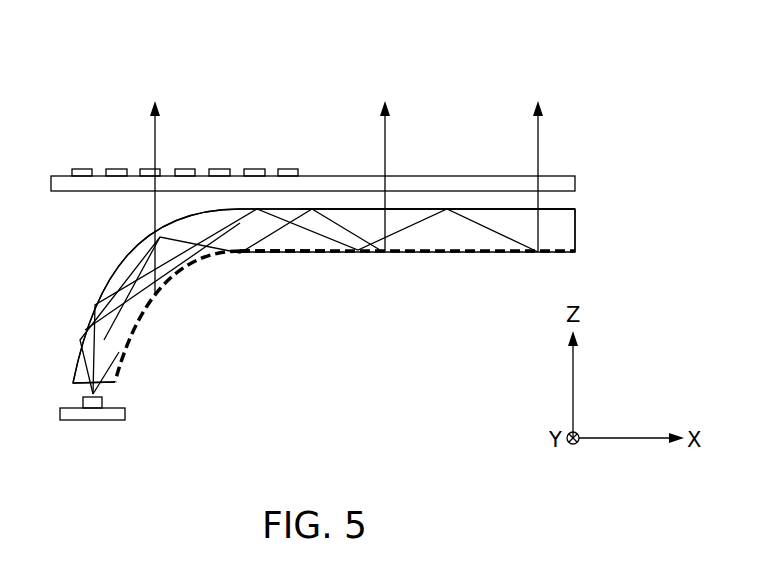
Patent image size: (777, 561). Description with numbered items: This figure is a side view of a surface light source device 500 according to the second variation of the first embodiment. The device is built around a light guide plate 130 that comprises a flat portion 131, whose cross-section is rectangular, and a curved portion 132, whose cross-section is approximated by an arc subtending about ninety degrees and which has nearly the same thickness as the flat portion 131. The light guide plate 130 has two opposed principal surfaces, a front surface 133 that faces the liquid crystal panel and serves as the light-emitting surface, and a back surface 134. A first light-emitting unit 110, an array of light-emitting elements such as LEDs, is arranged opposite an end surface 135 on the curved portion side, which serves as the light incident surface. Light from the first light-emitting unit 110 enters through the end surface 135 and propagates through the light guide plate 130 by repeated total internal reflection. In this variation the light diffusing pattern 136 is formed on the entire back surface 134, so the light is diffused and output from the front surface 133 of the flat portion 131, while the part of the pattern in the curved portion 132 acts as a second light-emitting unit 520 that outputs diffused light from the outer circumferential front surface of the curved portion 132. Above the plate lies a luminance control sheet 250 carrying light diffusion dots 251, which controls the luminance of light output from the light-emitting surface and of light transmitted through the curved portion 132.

The surface light source device 500 is at (99, 79).
The luminance control sheet 250 is at (312, 175).
The light diffusion dots 251 is at (86, 168).
The light guide plate 130 is at (87, 322).
The flat portion 131 is at (461, 226).
The curved portion 132 is at (116, 275).
The front surface 133 is at (408, 208).
The back surface 134 is at (233, 256).
The light diffusing pattern 136 is at (412, 255).
The second light-emitting unit 520 is at (153, 295).
The end surface 135 is at (78, 384).
The first light-emitting unit 110 is at (93, 421).